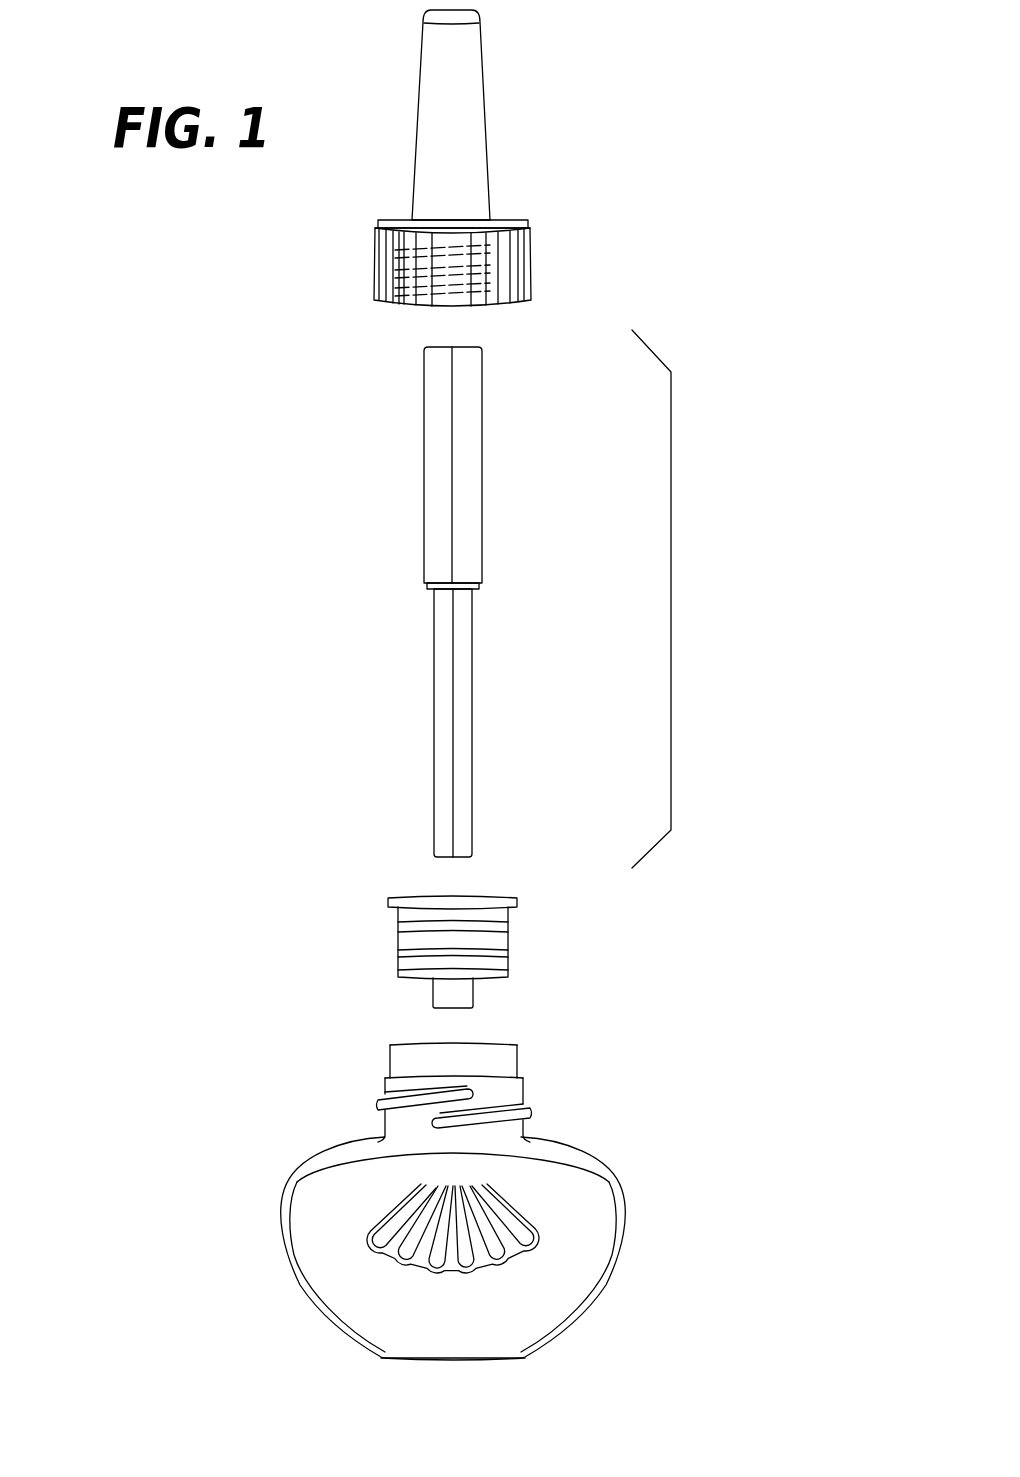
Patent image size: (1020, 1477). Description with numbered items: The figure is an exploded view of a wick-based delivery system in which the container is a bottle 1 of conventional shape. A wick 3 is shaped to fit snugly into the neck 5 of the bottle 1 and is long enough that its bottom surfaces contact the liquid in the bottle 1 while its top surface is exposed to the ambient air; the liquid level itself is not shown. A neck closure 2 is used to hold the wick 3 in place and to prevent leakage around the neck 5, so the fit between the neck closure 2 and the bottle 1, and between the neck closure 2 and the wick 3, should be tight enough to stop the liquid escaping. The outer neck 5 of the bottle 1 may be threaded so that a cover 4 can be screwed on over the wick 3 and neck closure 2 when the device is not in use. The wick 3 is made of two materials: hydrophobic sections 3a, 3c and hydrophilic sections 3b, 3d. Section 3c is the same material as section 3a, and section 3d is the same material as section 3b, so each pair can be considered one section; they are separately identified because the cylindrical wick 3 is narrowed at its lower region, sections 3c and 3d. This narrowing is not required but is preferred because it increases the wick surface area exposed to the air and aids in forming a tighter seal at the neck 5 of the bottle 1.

The bottle 1 is at (491, 1201).
The neck closure 2 is at (508, 938).
The wick 3 is at (671, 600).
The hydrophobic section 3a is at (434, 417).
The hydrophilic section 3b is at (475, 520).
The hydrophobic section 3c is at (441, 688).
The hydrophilic section 3d is at (463, 776).
The cover 4 is at (530, 263).
The neck 5 is at (523, 1094).